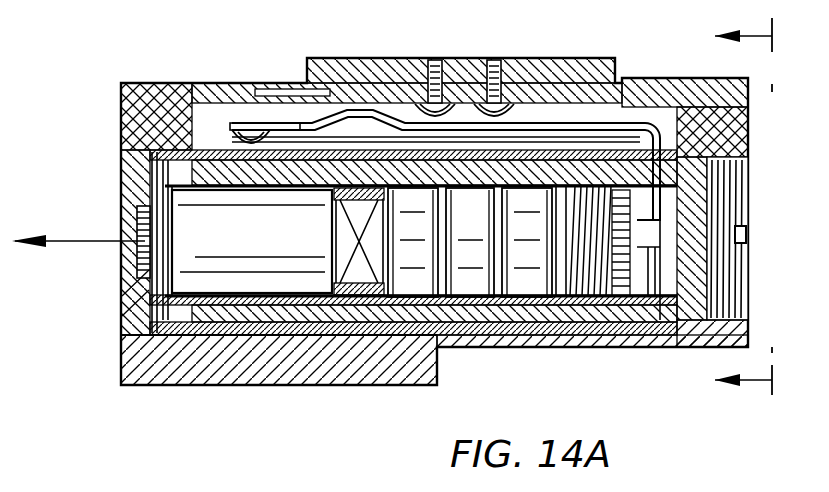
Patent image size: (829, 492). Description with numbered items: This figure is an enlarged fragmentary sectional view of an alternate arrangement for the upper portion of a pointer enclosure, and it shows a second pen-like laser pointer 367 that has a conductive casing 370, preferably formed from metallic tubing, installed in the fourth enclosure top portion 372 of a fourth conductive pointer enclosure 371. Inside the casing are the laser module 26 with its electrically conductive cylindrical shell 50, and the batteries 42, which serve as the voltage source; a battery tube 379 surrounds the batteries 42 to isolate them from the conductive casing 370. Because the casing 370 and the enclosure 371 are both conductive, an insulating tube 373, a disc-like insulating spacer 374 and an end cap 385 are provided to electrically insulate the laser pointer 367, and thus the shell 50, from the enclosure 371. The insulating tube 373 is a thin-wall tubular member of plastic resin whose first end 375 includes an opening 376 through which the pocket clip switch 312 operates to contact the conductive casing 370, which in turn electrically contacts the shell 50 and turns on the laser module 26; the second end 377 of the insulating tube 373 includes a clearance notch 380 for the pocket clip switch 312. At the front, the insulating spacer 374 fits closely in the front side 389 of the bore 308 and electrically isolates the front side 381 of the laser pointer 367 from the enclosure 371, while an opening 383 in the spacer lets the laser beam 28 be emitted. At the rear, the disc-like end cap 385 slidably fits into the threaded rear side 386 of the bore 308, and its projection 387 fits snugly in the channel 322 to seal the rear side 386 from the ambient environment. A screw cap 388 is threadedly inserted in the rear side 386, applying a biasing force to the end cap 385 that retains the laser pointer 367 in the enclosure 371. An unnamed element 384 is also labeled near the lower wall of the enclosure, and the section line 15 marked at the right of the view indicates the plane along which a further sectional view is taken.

The section line 15- 15 is at (730, 206).
The laser module 26 is at (224, 241).
The laser beam 28 is at (56, 240).
The battery 42 is at (482, 232).
The cylindrical shell 50 is at (271, 213).
The bore 308 is at (150, 345).
The pocket clip switch 312 is at (273, 114).
The channel 322 is at (363, 127).
The second pen-like laser pointer 367 is at (150, 153).
The conductive casing 370 is at (305, 313).
The fourth conductive pointer enclosure 371 is at (160, 378).
The fourth enclosure top portion 372 is at (209, 375).
The insulating tube 373 is at (360, 332).
The insulating spacer 374 is at (130, 288).
The first end 375 is at (146, 86).
The opening 376 is at (228, 147).
The second end 377 is at (598, 140).
The battery tube 379 is at (470, 322).
The clearance notch 380 is at (692, 119).
The front side 381 is at (128, 178).
The opening 383 is at (136, 227).
The lower seal band 384 is at (630, 348).
The end cap 385 is at (740, 246).
The threaded rear side 386 is at (678, 348).
The projection 387 is at (734, 142).
The screw cap 388 is at (745, 312).
The front side 389 is at (134, 118).